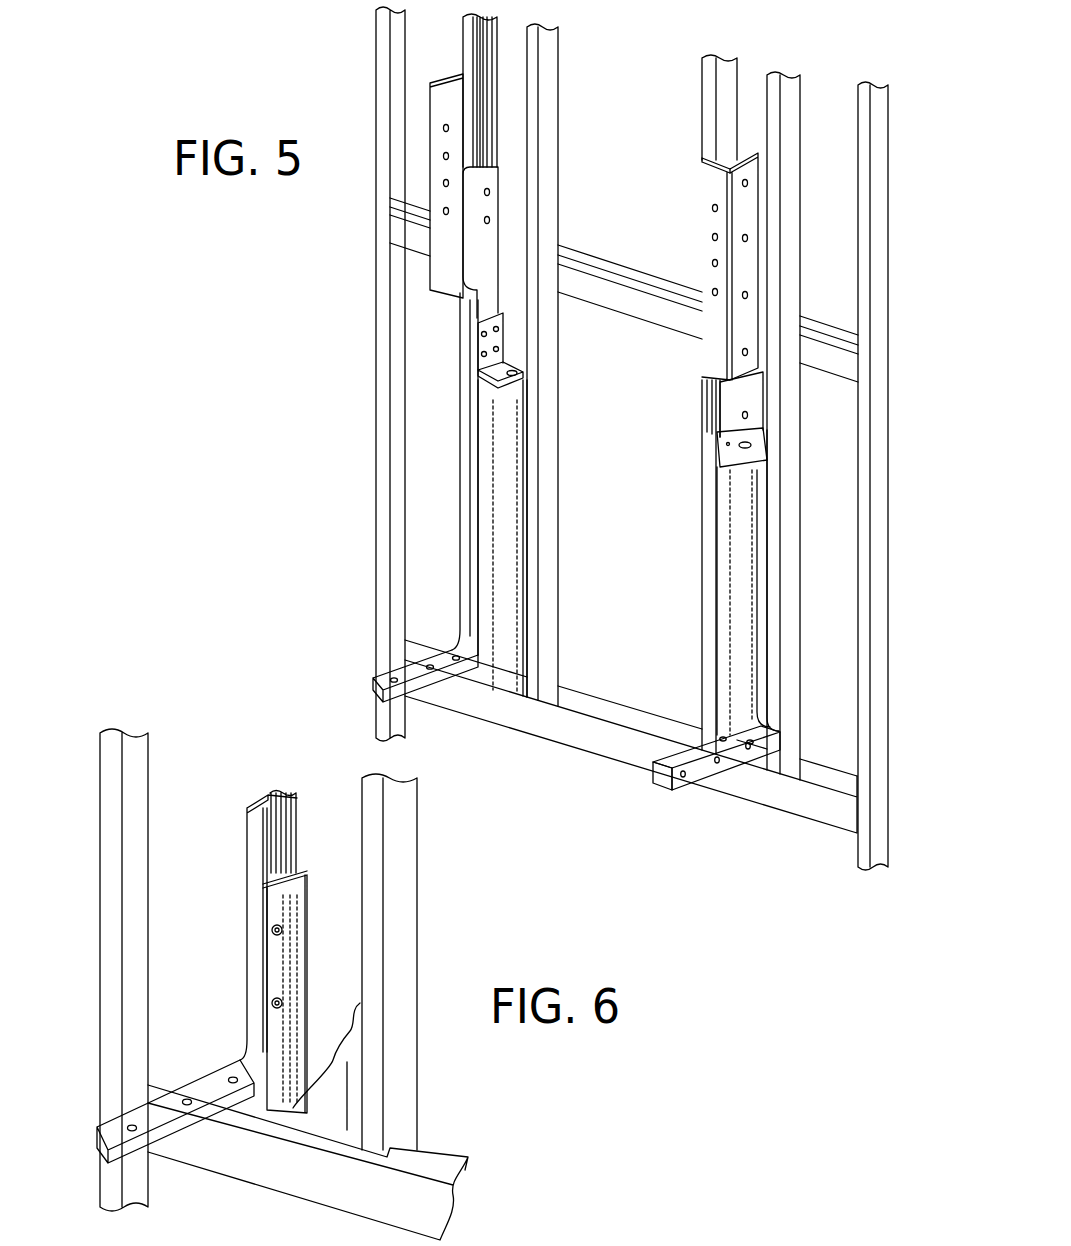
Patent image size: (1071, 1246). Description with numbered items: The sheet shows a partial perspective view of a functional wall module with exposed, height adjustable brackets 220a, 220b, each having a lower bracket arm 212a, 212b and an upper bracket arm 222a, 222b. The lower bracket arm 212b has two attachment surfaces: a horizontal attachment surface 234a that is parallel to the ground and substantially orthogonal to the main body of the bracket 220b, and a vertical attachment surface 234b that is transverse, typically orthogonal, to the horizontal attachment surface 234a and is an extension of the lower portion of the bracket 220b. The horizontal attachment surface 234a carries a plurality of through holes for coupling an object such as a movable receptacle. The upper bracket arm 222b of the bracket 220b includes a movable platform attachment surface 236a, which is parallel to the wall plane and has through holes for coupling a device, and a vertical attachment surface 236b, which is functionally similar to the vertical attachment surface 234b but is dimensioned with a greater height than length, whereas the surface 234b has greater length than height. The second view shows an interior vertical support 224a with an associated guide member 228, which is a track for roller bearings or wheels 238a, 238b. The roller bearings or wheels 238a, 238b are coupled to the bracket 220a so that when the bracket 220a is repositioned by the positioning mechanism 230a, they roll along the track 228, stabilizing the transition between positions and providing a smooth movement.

In FIG. 5, the lower bracket arm 212a is at (367, 678).
In FIG. 6, the lower bracket arm 212a is at (163, 970).
In FIG. 5, the lower bracket arm 212b is at (671, 752).
In FIG. 5, the height adjustable bracket 220a is at (477, 443).
In FIG. 6, the height adjustable bracket 220a is at (331, 992).
In FIG. 5, the height adjustable bracket 220b is at (762, 535).
In FIG. 5, the upper bracket arm 222a is at (437, 261).
In FIG. 5, the upper bracket arm 222b is at (700, 340).
In FIG. 6, the interior vertical support 224a is at (245, 850).
In FIG. 6, the guide member 228 is at (280, 846).
In FIG. 6, the positioning mechanism 230a is at (323, 1123).
In FIG. 5, the horizontal attachment surface 234a is at (677, 758).
In FIG. 5, the vertical attachment surface 234b is at (708, 768).
In FIG. 5, the movable platform attachment surface 236a is at (712, 247).
In FIG. 5, the vertical attachment surface 236b is at (750, 277).
In FIG. 6, the roller bearing or wheel 238a is at (268, 933).
In FIG. 6, the roller bearing or wheel 238b is at (268, 1003).